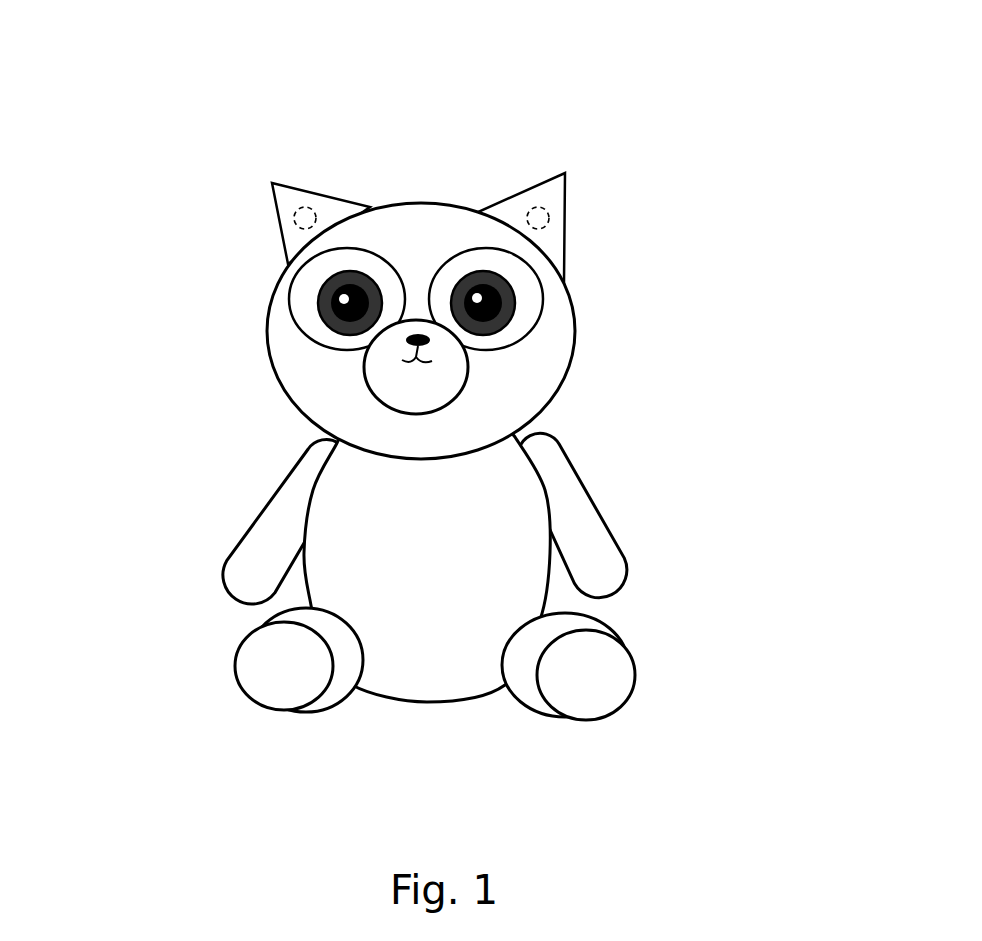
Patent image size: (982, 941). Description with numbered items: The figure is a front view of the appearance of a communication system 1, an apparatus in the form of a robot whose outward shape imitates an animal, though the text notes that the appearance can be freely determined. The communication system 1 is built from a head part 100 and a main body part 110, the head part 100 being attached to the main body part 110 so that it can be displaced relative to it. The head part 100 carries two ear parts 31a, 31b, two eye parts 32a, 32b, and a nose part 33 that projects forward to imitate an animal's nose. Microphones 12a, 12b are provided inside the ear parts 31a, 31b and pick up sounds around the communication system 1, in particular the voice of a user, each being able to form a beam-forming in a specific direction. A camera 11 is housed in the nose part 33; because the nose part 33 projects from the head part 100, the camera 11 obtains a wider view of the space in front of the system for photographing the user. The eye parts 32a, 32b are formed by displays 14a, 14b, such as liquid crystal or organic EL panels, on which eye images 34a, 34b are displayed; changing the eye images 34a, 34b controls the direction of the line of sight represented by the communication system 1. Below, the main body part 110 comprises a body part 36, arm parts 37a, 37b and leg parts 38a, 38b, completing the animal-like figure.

The communication system 1 is at (472, 64).
The head part 100 is at (645, 135).
The main body part 110 is at (673, 433).
The microphone 12a is at (305, 207).
The microphone 12b is at (538, 207).
The ear part 31a is at (280, 212).
The ear part 31b is at (565, 213).
The eye part 32a is at (303, 288).
The eye part 32b is at (538, 295).
The display 14a is at (265, 302).
The display 14b is at (570, 302).
The nose part 33 is at (407, 342).
The camera 11 is at (417, 348).
The eye image 34a is at (332, 312).
The eye image 34b is at (507, 315).
The body part 36 is at (467, 673).
The arm part 37a is at (253, 542).
The arm part 37b is at (607, 550).
The leg part 38a is at (248, 660).
The leg part 38b is at (622, 678).